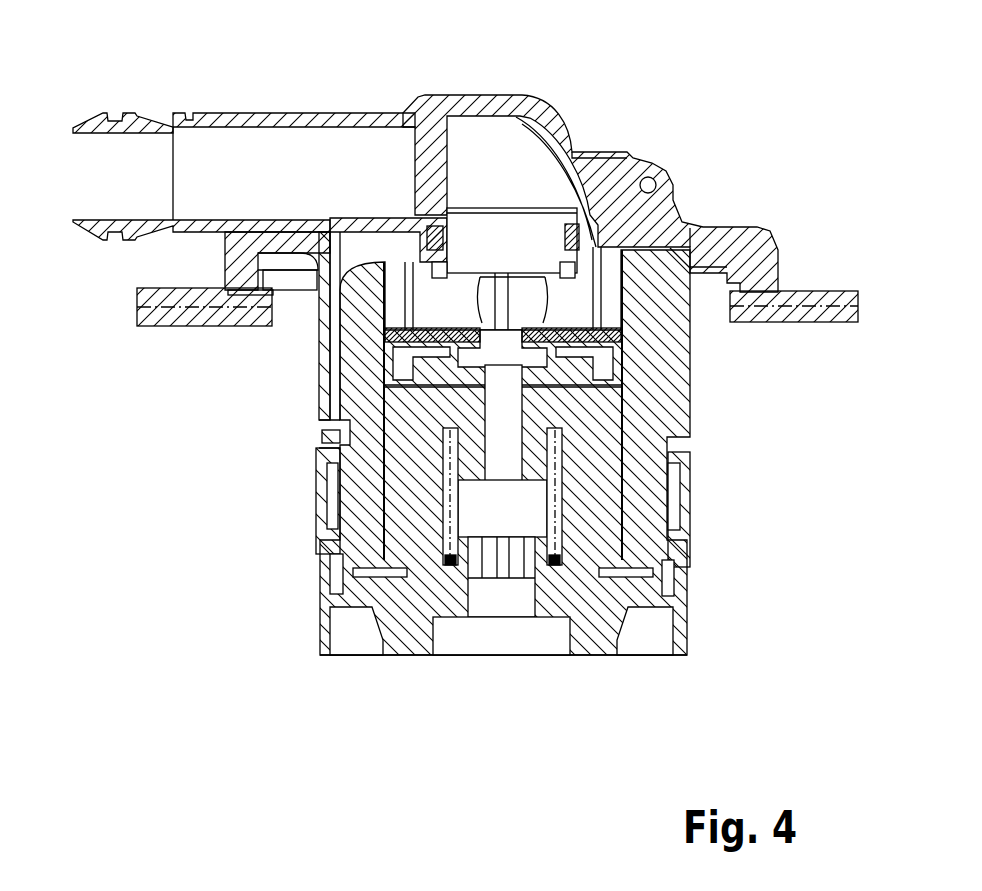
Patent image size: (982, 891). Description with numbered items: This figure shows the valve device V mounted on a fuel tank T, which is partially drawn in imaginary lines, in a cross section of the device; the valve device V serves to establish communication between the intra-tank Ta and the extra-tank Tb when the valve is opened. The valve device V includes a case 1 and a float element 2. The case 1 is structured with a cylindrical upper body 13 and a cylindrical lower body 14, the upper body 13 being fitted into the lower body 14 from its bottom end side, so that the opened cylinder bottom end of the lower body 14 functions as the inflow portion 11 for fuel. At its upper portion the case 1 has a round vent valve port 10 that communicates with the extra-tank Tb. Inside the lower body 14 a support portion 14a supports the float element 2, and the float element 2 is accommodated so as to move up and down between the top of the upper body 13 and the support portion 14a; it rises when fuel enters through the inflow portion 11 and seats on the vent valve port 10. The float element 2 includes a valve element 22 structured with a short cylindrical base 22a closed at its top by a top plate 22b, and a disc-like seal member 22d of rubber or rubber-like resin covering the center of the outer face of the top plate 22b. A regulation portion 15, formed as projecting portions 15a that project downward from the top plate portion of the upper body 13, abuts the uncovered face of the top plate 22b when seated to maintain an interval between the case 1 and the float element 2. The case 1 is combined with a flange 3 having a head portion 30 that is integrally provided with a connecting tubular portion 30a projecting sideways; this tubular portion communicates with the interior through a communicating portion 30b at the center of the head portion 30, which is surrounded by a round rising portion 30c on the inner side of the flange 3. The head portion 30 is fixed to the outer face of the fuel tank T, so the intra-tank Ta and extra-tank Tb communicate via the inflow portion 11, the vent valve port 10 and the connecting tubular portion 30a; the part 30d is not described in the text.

The valve device V is at (552, 62).
The fuel tank T is at (808, 290).
The intra-tank Ta is at (792, 541).
The extra-tank Tb is at (722, 70).
The case 1 is at (320, 497).
The float element 2 is at (600, 483).
The flange 3 is at (666, 184).
The head portion 30 is at (554, 150).
The connecting tubular portion 30a is at (220, 113).
The communicating portion 30b is at (468, 210).
The round rising portion 30c is at (420, 170).
The cap flange 30d is at (357, 240).
The vent valve port 10 is at (522, 313).
The inflow portion 11 is at (637, 655).
The upper body 13 is at (320, 430).
The lower body 14 is at (320, 617).
The support portion 14a is at (490, 593).
The regulation portion 15 is at (432, 235).
The projecting portions 15a is at (594, 240).
The valve element 22 is at (690, 372).
The base 22a is at (690, 410).
The top plate 22b is at (692, 343).
The seal member 22d is at (542, 300).